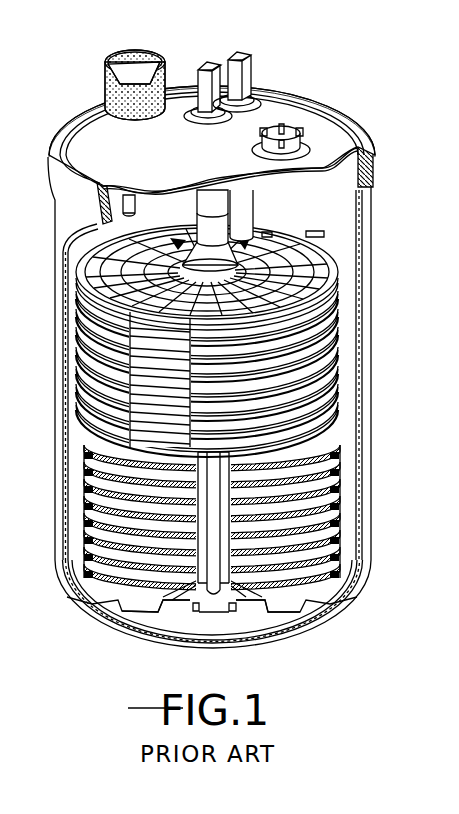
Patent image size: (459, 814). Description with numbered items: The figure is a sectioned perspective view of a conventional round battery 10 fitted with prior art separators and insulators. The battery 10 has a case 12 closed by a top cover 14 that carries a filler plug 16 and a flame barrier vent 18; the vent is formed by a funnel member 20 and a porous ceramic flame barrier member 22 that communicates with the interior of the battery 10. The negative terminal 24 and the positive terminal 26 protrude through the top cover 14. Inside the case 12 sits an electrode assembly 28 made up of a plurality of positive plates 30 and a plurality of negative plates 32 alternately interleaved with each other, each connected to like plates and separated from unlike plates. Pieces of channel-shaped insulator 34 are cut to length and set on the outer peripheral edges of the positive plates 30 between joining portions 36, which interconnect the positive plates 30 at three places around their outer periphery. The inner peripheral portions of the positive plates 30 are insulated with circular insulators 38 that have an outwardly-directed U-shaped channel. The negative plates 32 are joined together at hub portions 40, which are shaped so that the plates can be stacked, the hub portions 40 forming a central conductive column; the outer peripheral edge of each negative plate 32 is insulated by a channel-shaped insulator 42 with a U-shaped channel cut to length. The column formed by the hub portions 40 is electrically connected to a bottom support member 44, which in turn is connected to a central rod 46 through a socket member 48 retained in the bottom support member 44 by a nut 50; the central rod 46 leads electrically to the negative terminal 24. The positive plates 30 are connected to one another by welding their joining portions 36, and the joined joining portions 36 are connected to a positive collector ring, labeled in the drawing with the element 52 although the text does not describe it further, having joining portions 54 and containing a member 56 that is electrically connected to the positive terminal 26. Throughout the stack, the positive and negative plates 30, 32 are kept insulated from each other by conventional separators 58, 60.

The round battery 10 is at (390, 226).
The case 12 is at (367, 341).
The top cover 14 is at (330, 140).
The filler plug 16 is at (290, 130).
The flame barrier vent 18 is at (168, 45).
The funnel member 20 is at (131, 62).
The porous ceramic flame barrier member 22 is at (105, 80).
The negative terminal 24 is at (215, 62).
The positive terminal 26 is at (244, 53).
The electrode assembly 28 is at (336, 223).
The positive plates 30 is at (346, 470).
The negative plates 32 is at (343, 518).
The channel-shaped insulator 34 is at (338, 318).
The joining portions 36 is at (148, 362).
The circular insulators 38 is at (246, 577).
The hub portions 40 is at (193, 580).
The channel-shaped insulator 42 is at (84, 548).
The bottom support member 44 is at (106, 598).
The central rod 46 is at (206, 601).
The socket member 48 is at (222, 602).
The nut 50 is at (240, 604).
The grid 52 is at (77, 282).
The joining portions 54 is at (300, 233).
The member 56 is at (248, 212).
The separator 58 is at (84, 464).
The separator 60 is at (88, 481).